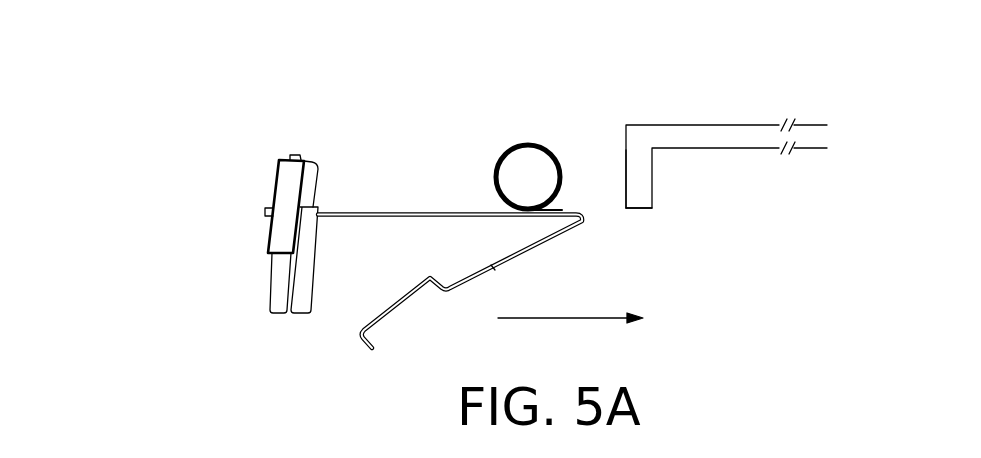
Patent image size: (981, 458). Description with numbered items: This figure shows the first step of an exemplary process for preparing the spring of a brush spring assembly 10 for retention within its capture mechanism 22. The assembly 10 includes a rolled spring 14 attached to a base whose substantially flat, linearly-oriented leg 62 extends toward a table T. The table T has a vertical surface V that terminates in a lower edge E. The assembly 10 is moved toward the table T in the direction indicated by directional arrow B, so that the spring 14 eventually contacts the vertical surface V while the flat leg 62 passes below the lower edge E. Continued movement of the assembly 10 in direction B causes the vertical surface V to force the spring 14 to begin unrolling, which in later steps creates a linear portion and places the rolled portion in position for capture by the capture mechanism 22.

The brush spring assembly 10 is at (167, 158).
The spring 14 is at (530, 143).
The capture mechanism 22 is at (268, 309).
The leg 62 is at (447, 218).
The table T is at (748, 122).
The vertical surface V is at (626, 190).
The lower edge E is at (640, 209).
The directional arrow B is at (570, 334).